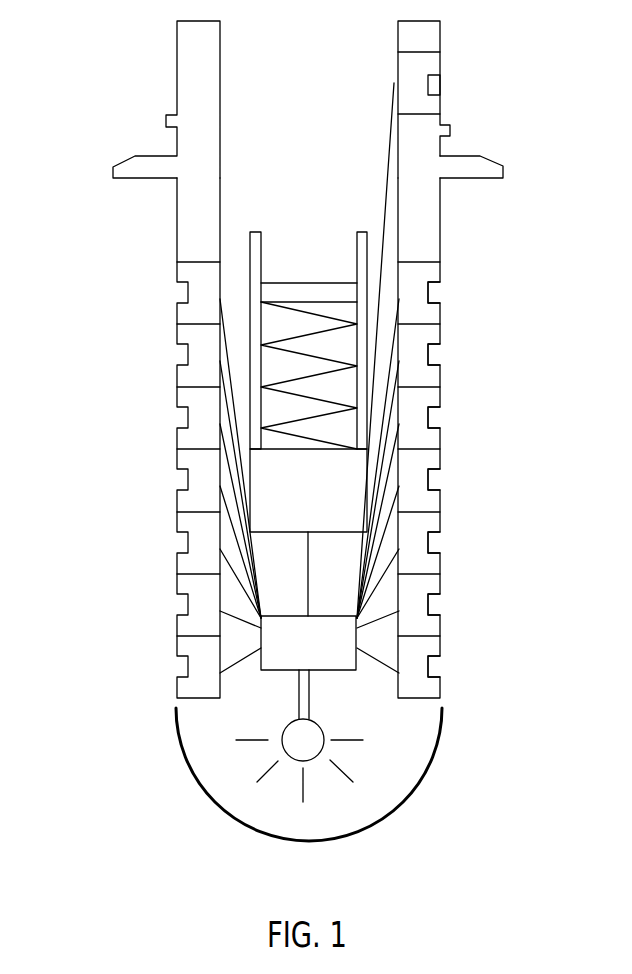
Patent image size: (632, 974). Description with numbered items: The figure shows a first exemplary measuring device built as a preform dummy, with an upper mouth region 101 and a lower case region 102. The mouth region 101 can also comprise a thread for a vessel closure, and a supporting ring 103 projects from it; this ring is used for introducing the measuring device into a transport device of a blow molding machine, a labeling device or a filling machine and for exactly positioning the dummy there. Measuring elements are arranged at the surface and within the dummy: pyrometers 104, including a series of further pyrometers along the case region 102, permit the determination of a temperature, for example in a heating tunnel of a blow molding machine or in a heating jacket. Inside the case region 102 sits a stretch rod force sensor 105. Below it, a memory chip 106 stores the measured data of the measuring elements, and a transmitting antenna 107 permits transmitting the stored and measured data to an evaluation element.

The mouth region 101 is at (97, 22).
The case region 102 is at (97, 183).
The supporting ring 103 is at (497, 157).
The pyrometer 104 is at (430, 67).
The stretch rod force sensor 105 is at (326, 501).
The memory chip 106 is at (326, 657).
The transmitting antenna 107 is at (297, 752).